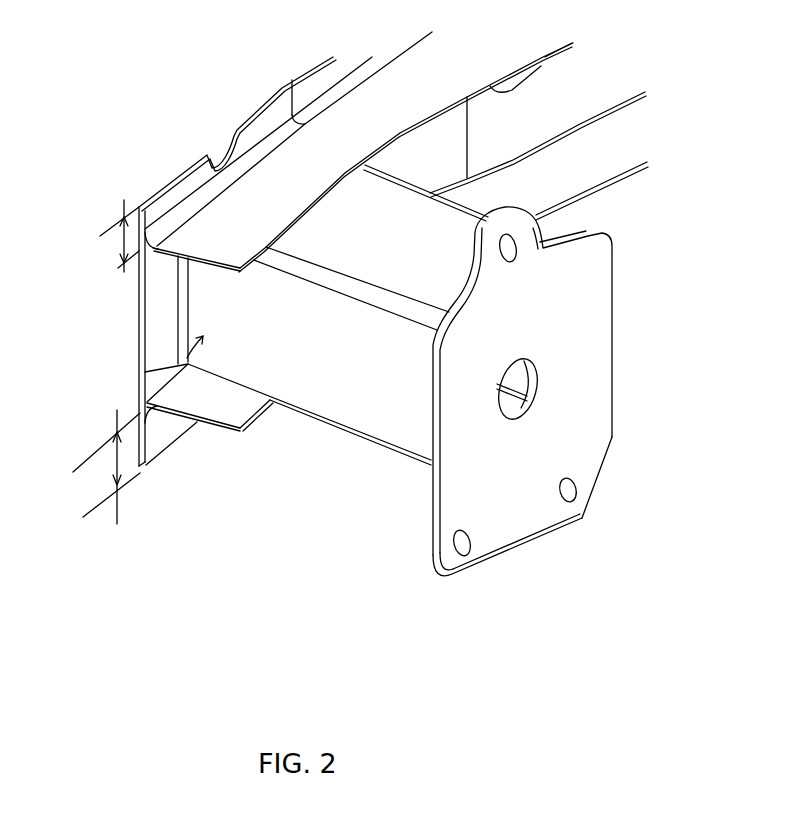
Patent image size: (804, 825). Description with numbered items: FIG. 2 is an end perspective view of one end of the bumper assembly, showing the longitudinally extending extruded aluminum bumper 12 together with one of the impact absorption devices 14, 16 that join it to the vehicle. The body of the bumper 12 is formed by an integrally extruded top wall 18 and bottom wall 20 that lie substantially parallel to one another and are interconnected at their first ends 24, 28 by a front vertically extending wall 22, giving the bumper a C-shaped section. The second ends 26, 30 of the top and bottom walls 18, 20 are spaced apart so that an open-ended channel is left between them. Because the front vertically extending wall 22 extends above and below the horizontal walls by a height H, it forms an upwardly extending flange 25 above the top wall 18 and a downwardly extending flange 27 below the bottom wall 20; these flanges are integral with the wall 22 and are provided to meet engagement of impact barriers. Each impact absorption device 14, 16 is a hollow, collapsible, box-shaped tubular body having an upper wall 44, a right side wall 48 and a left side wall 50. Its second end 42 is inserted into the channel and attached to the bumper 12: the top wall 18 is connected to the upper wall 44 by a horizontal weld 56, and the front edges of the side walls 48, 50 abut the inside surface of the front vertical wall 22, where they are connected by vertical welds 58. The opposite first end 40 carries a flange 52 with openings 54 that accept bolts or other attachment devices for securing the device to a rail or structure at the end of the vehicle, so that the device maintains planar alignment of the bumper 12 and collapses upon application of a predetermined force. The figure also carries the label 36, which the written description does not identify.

The longitudinally extending extruded aluminum bumper 12 is at (253, 102).
The first impact absorption device 14 is at (569, 401).
The second impact absorption device 16 is at (551, 401).
The top wall 18 is at (388, 98).
The bottom wall 20 is at (218, 425).
The front vertically extending wall 22 is at (140, 284).
The first end of top wall 24 is at (350, 70).
The upwardly extending flange 25 is at (167, 200).
The second end of top wall 26 is at (545, 57).
The downwardly extending flange 27 is at (140, 443).
The first end of bottom wall 28 is at (150, 412).
The second end of bottom wall 30 is at (257, 420).
The rail member 36 is at (598, 152).
The first end of impact absorption device 40 is at (608, 373).
The second end of impact absorption device 42 is at (130, 352).
The upper wall 44 is at (397, 217).
The right side wall 48 is at (403, 430).
The left side wall 50 is at (527, 399).
The flange 52 is at (595, 443).
The openings 54 is at (515, 260).
The horizontal welds 56 is at (305, 226).
The vertical welds 58 is at (183, 303).
The height H is at (110, 231).